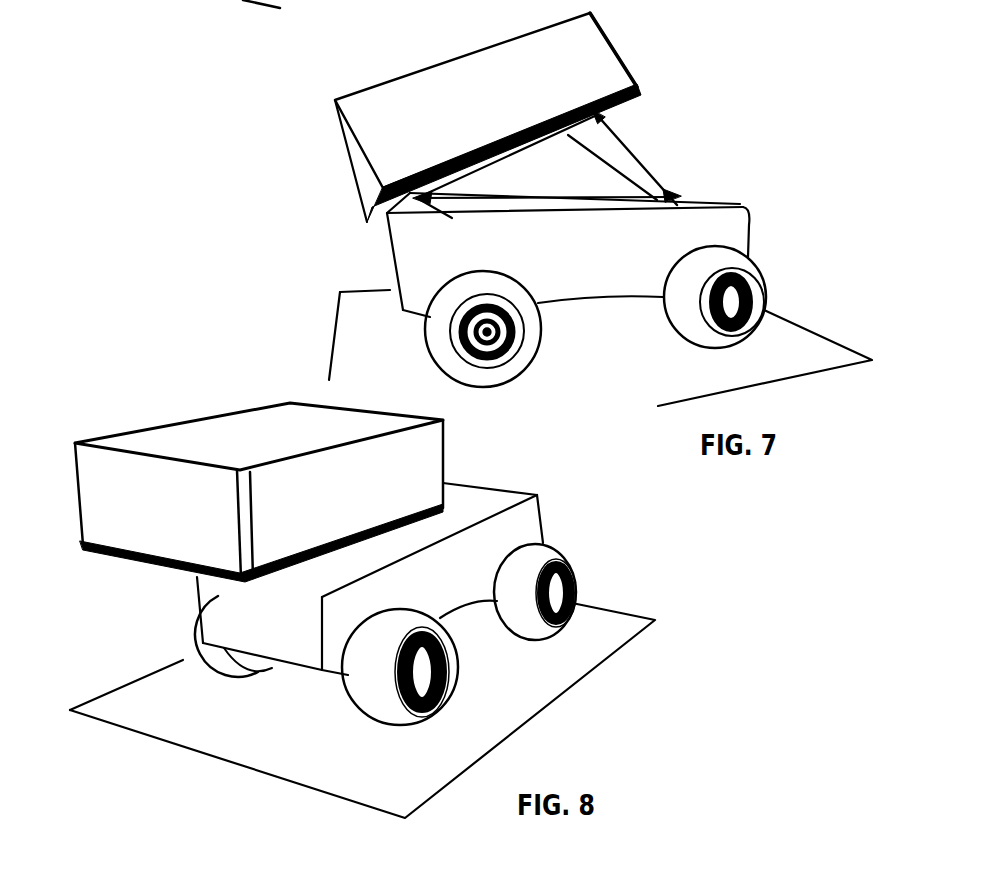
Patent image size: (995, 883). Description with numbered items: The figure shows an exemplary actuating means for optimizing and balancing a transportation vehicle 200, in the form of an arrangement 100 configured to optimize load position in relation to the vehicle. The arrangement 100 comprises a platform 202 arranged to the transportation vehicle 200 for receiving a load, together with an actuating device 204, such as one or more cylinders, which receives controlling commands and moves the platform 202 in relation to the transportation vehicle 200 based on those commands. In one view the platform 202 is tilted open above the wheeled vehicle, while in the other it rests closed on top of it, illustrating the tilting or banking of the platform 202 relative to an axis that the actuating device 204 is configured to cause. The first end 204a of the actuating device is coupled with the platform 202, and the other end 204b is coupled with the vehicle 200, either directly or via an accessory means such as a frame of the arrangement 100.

In FIG. 7, the arrangement 100 is at (381, 205).
In FIG. 8, the arrangement 100 is at (140, 570).
In FIG. 8, the transportation vehicle 200 is at (291, 663).
In FIG. 8, the platform 202 is at (203, 428).
In FIG. 7, the actuating device 204 is at (625, 160).
In FIG. 7, the first end of the actuating device 204a is at (628, 113).
In FIG. 7, the another end of the actuating device 204b is at (690, 190).